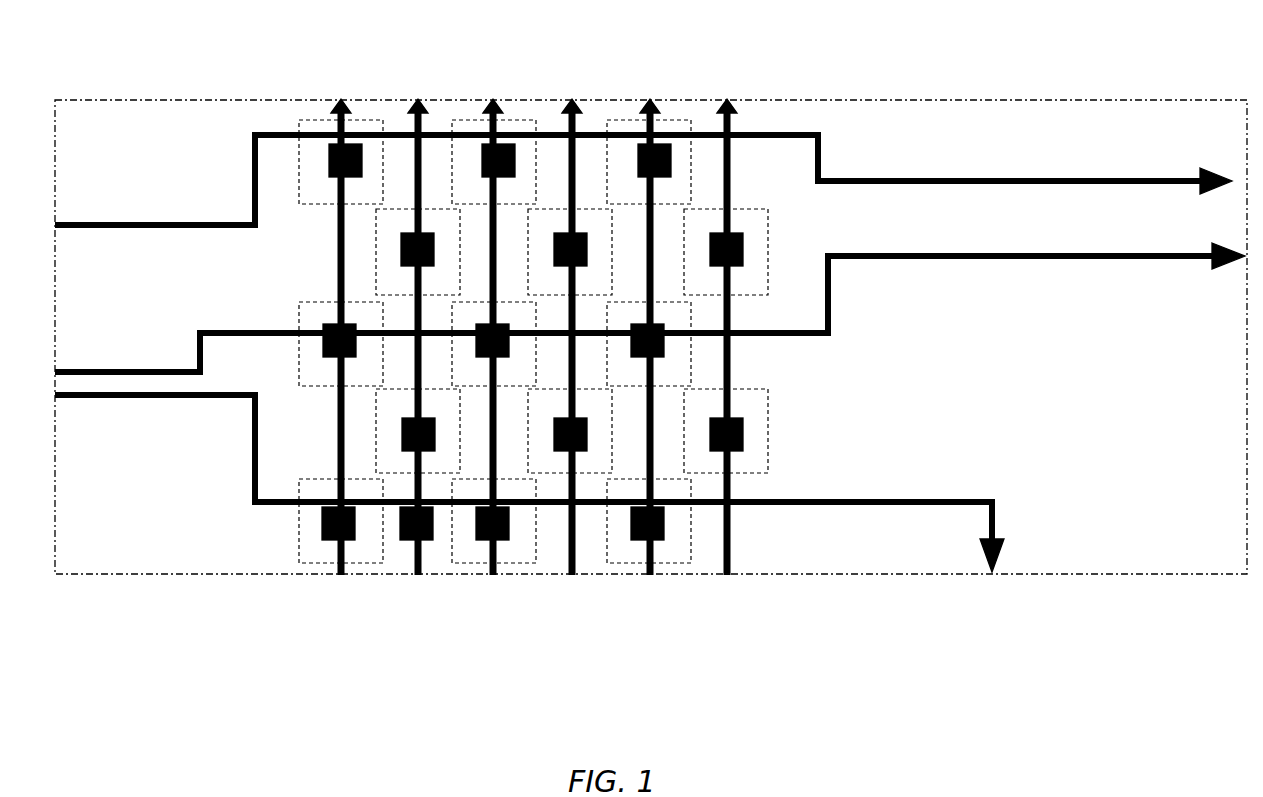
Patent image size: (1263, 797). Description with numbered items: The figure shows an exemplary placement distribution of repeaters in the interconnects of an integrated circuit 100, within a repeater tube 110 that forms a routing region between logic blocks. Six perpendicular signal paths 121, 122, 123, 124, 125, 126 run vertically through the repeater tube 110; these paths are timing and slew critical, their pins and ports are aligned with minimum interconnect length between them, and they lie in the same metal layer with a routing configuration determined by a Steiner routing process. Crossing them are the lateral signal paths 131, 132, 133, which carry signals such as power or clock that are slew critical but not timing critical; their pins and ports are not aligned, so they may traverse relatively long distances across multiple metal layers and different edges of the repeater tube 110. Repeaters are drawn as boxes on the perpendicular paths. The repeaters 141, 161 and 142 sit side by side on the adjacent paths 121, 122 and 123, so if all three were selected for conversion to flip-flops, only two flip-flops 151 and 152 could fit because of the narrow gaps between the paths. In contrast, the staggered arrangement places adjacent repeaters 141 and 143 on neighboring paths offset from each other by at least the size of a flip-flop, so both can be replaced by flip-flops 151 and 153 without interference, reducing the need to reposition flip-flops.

The memory device 100 is at (651, 325).
The repeater tube 110 is at (1006, 380).
The perpendicular signal path 121 is at (348, 100).
The perpendicular signal path 122 is at (428, 102).
The perpendicular signal path 123 is at (504, 105).
The perpendicular signal path 124 is at (583, 105).
The perpendicular signal path 125 is at (660, 105).
The sixth column line 126 is at (737, 105).
The lateral signal path 131 is at (1000, 180).
The lateral signal path 132 is at (958, 255).
The lateral signal path 133 is at (915, 500).
The repeater 141 is at (322, 540).
The repeater 142 is at (505, 541).
The repeater 143 is at (402, 449).
The flip-flop 151 is at (300, 563).
The flip-flop 152 is at (474, 563).
The flip-flop 153 is at (376, 430).
The repeater 161 is at (402, 540).